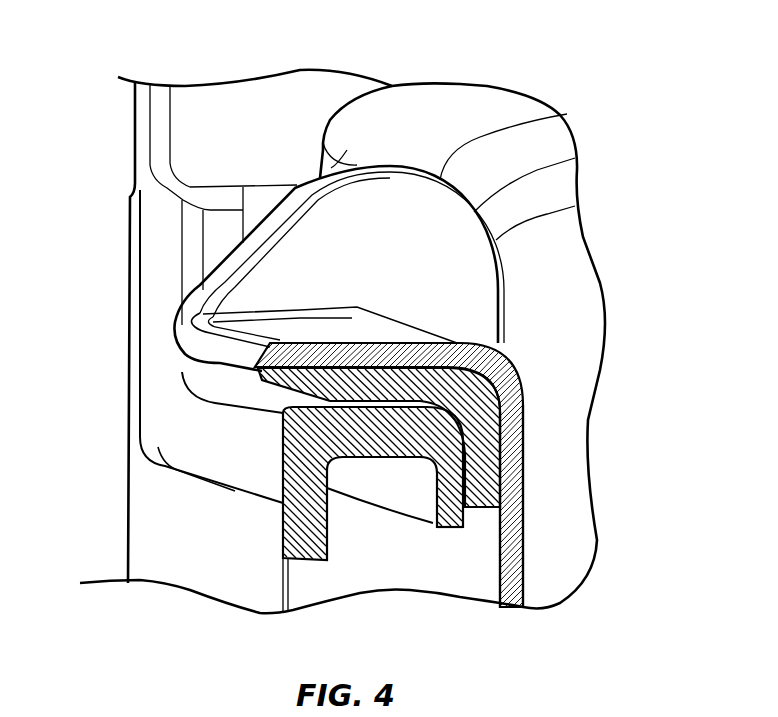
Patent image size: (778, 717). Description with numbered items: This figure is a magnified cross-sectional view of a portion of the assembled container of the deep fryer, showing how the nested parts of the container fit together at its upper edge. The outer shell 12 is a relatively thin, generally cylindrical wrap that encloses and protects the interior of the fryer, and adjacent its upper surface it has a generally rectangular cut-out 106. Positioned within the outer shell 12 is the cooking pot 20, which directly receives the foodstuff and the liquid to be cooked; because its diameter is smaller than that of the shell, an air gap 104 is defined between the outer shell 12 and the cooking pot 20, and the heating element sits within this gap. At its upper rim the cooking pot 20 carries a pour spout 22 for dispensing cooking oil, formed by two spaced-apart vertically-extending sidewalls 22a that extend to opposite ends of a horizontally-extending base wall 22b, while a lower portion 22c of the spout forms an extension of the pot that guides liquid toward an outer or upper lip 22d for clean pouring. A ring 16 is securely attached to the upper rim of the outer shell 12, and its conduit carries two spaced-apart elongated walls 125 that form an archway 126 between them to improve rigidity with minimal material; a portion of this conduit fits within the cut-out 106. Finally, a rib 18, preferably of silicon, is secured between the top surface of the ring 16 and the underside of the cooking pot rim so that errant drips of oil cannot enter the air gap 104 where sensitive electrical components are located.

The outer shell 12 is at (123, 527).
The ring 16 is at (263, 87).
The rib 18 is at (323, 383).
The cooking pot 20 is at (468, 100).
The pour spout 22 is at (273, 346).
The sidewalls 22a is at (263, 278).
The base wall 22b is at (240, 323).
The lower portion 22c is at (520, 587).
The outer/upper lip 22d is at (193, 337).
The air gap 104 is at (460, 577).
The cut-out 106 is at (177, 470).
The elongated walls 125 is at (487, 493).
The archway 126 is at (362, 523).